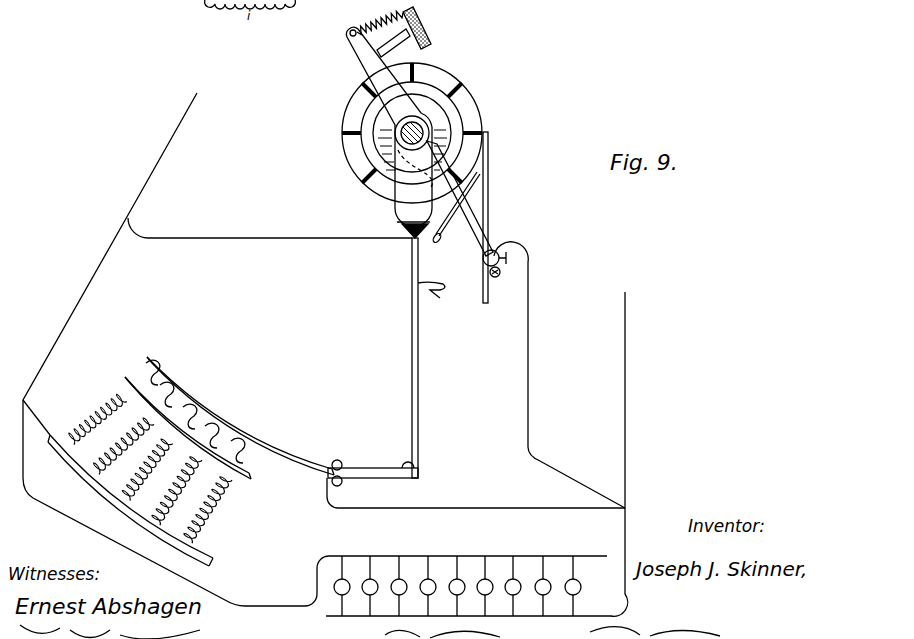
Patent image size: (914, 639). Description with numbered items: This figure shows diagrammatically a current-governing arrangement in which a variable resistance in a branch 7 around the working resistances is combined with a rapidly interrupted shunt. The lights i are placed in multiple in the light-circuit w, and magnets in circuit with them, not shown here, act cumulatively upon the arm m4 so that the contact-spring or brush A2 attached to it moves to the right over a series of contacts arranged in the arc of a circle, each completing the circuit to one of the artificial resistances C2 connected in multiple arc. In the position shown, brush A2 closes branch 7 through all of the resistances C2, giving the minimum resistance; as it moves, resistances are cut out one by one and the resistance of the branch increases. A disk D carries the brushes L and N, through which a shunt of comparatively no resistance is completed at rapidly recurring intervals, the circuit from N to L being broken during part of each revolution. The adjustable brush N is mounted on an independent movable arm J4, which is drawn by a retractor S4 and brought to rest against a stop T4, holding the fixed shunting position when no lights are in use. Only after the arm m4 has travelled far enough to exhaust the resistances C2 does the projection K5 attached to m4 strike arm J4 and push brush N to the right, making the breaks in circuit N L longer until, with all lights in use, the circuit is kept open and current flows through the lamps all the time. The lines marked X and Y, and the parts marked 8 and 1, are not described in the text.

The axis Y line Y is at (176, 130).
The axis X line X is at (633, 337).
The frame 8 is at (376, 363).
The branch 7 is at (476, 493).
The light-circuit w is at (468, 575).
The lights i is at (457, 583).
The arm m4 is at (390, 362).
The contact-spring A2 is at (229, 418).
The artificial resistances C2 is at (149, 467).
The curved rail 1 is at (56, 410).
The disk D is at (348, 128).
The movable arm J4 is at (370, 68).
The retractor S4 is at (373, 20).
The stop T4 is at (406, 38).
The brush L is at (460, 198).
The adjustable brush N is at (496, 217).
The arm K5 is at (437, 294).